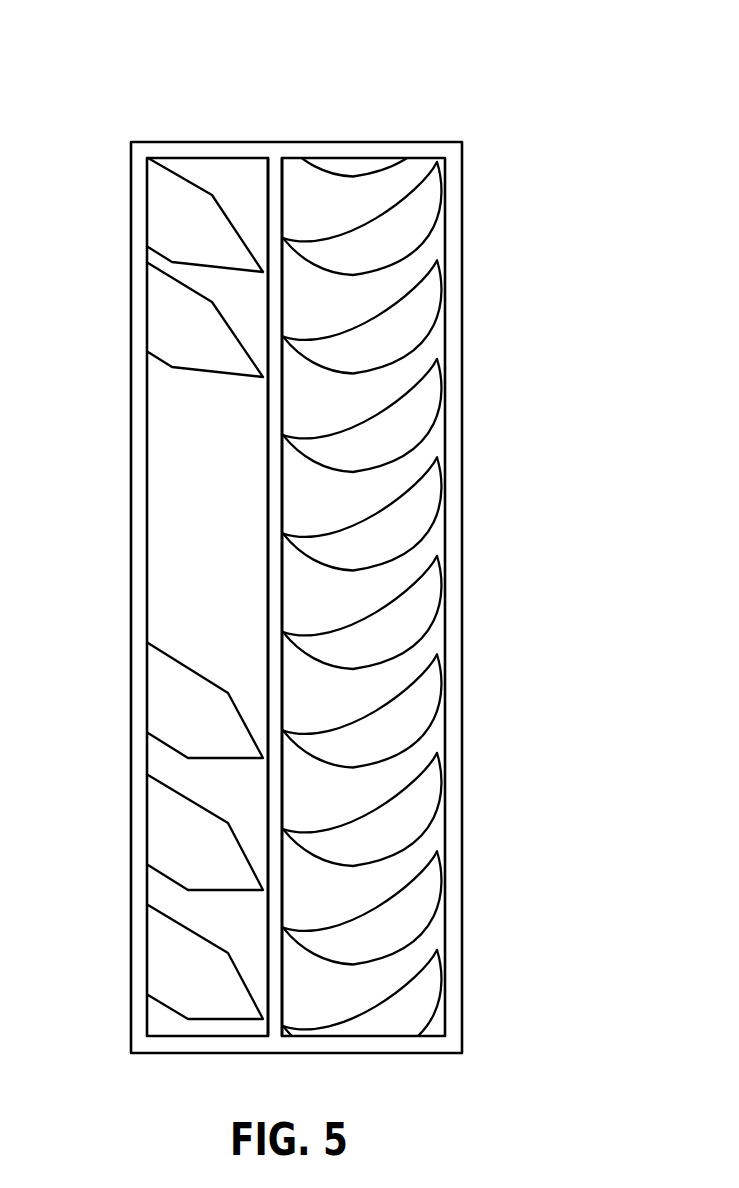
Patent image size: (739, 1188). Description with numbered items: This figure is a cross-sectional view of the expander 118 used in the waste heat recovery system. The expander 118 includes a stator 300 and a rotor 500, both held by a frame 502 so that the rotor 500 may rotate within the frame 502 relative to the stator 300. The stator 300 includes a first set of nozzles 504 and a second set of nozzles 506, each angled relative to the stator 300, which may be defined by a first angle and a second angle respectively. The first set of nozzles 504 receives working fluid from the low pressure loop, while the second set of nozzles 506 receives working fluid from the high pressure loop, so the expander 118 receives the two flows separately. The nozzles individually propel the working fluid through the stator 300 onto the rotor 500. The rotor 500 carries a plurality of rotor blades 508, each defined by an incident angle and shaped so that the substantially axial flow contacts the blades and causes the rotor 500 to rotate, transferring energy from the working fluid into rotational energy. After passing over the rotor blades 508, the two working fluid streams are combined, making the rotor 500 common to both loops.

The expander 118 is at (531, 79).
The stator 300 is at (220, 157).
The rotor 500 is at (423, 157).
The frame 502 is at (288, 141).
The first set of nozzles 504 is at (162, 697).
The second set of nozzles 506 is at (162, 195).
The rotor blades 508 is at (423, 400).